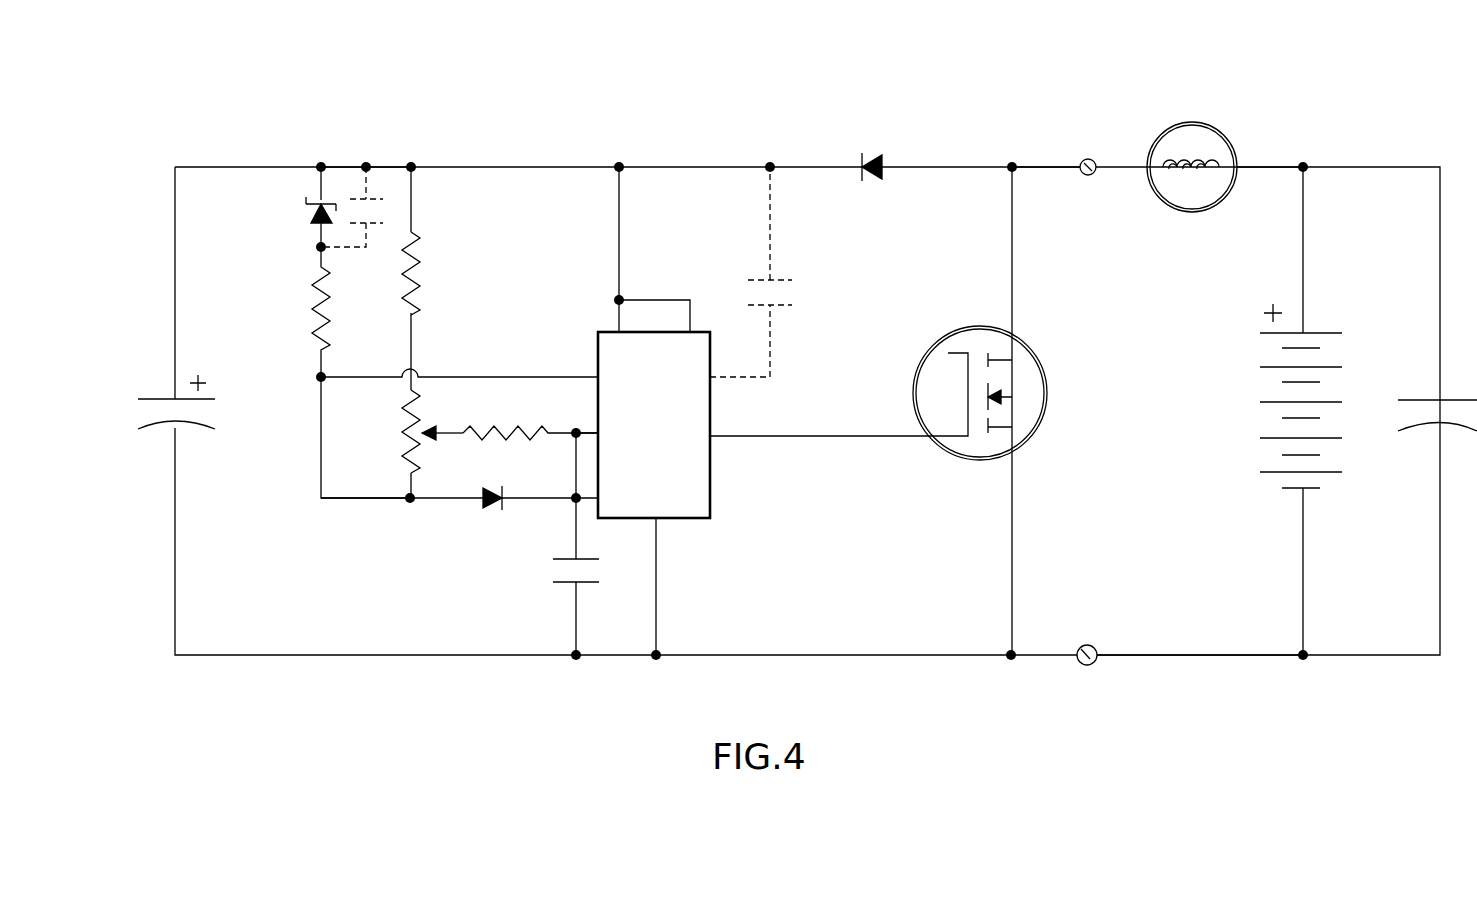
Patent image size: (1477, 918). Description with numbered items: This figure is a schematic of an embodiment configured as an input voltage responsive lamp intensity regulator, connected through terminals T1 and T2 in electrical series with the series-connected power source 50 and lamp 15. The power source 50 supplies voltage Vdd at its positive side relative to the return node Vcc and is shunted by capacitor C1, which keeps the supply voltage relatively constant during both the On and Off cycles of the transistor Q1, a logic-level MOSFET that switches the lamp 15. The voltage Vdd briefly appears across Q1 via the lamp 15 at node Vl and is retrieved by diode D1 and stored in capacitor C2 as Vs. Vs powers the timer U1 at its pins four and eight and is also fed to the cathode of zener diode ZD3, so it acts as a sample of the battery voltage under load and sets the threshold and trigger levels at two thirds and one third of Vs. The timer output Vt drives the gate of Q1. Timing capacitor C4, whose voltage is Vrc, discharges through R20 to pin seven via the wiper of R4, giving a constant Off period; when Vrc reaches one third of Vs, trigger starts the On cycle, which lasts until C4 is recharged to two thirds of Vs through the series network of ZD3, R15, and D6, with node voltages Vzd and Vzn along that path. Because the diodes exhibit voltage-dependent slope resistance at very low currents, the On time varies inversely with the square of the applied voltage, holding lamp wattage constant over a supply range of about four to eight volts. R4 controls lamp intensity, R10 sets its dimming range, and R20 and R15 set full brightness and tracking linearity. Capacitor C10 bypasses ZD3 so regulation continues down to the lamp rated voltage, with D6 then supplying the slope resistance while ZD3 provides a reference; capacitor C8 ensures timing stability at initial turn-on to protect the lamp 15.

The zener diode ZD3 is at (313, 212).
The capacitor C10 is at (385, 212).
The resistor R10 is at (418, 264).
The resistor R15 is at (318, 330).
The potentiometer R4 is at (413, 421).
The resistor R20 is at (523, 423).
The diode D6 is at (487, 510).
The timing capacitor C4 is at (552, 568).
The timer U1 is at (677, 470).
The capacitor C8 is at (786, 292).
The diode D1 is at (872, 183).
The transistor Q1 is at (1031, 405).
The terminal T1 is at (1088, 177).
The terminal T2 is at (1079, 647).
The lamp 15 is at (1192, 140).
The power source 50 is at (1263, 457).
The capacitor C1 is at (1407, 415).
The capacitor C2 is at (207, 412).
The sample voltage Vs is at (348, 165).
The zener diode voltage Vzd is at (317, 246).
The zener network voltage Vzn is at (378, 500).
The timing capacitor voltage Vrc is at (572, 503).
The timer output voltage Vt is at (851, 435).
The lamp voltage Vl is at (1037, 165).
The power source voltage Vdd is at (1280, 167).
The common return voltage Vcc is at (1158, 653).